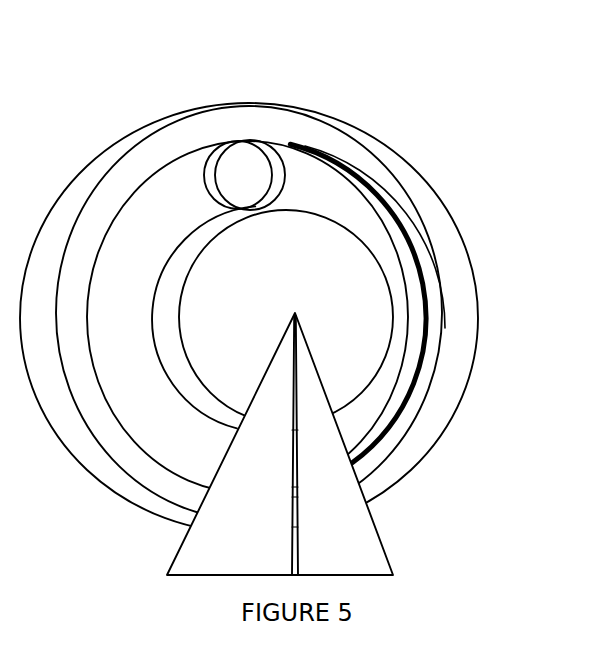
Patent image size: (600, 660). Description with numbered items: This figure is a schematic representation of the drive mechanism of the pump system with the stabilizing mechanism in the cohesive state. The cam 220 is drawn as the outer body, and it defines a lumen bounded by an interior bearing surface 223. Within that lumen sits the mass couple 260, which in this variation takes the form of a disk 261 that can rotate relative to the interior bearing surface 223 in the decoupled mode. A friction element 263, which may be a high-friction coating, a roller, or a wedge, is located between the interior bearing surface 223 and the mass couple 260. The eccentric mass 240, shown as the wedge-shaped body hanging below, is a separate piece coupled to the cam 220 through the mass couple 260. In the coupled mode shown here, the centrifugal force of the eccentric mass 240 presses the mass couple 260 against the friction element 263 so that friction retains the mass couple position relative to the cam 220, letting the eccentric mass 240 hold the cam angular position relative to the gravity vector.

The cam 220 is at (446, 198).
The interior bearing surface 223 is at (431, 263).
The eccentric mass 240 is at (362, 538).
The mass couple 260 is at (411, 320).
The disk 261 is at (325, 250).
The friction element 263 is at (250, 158).